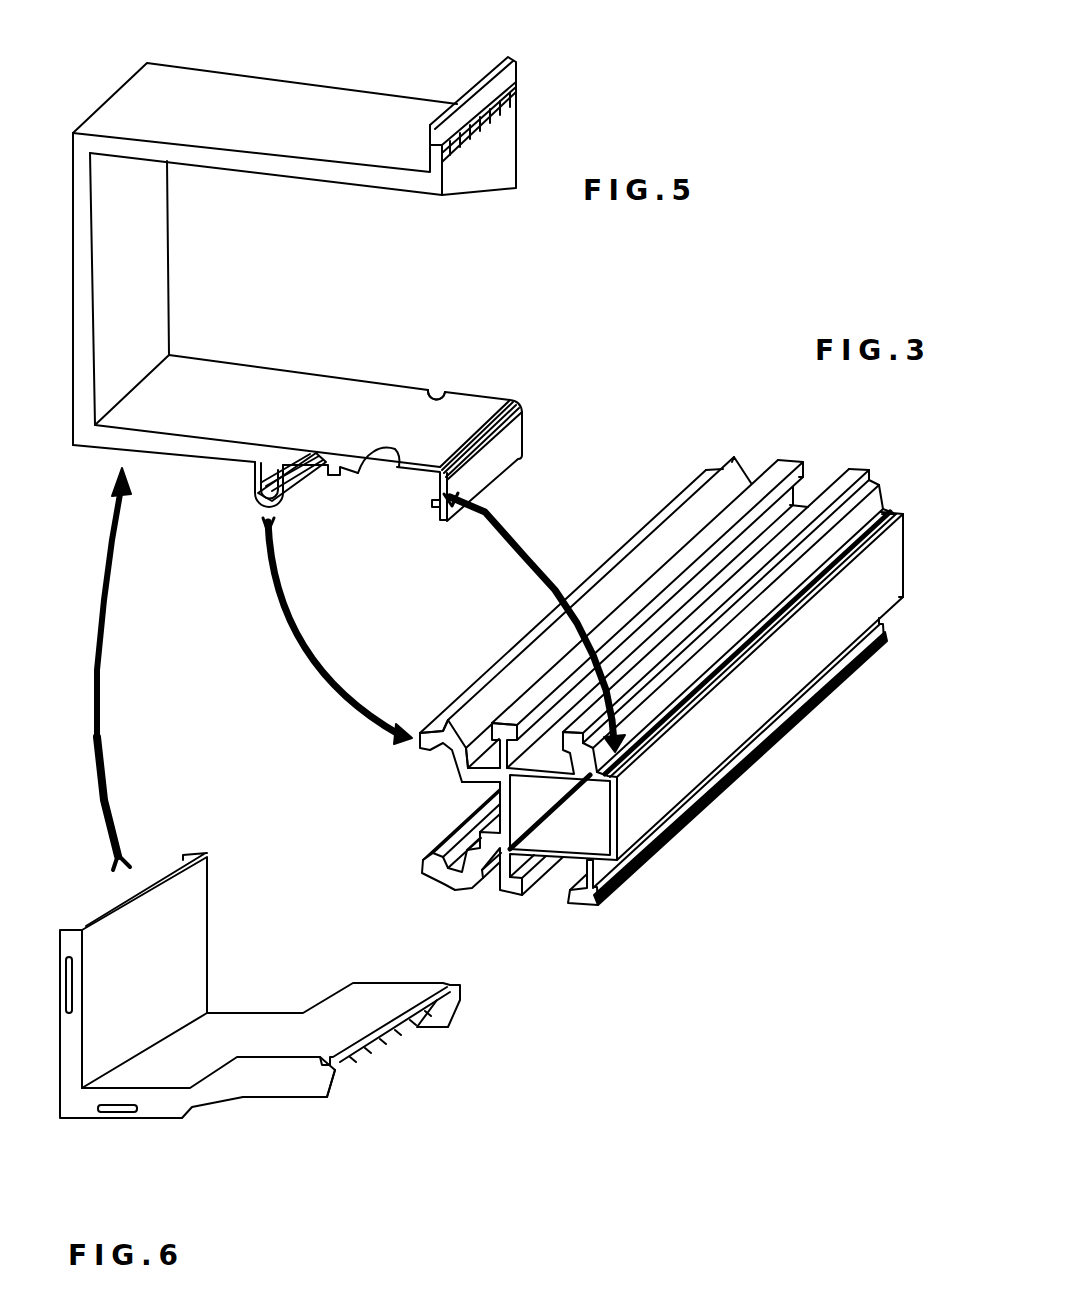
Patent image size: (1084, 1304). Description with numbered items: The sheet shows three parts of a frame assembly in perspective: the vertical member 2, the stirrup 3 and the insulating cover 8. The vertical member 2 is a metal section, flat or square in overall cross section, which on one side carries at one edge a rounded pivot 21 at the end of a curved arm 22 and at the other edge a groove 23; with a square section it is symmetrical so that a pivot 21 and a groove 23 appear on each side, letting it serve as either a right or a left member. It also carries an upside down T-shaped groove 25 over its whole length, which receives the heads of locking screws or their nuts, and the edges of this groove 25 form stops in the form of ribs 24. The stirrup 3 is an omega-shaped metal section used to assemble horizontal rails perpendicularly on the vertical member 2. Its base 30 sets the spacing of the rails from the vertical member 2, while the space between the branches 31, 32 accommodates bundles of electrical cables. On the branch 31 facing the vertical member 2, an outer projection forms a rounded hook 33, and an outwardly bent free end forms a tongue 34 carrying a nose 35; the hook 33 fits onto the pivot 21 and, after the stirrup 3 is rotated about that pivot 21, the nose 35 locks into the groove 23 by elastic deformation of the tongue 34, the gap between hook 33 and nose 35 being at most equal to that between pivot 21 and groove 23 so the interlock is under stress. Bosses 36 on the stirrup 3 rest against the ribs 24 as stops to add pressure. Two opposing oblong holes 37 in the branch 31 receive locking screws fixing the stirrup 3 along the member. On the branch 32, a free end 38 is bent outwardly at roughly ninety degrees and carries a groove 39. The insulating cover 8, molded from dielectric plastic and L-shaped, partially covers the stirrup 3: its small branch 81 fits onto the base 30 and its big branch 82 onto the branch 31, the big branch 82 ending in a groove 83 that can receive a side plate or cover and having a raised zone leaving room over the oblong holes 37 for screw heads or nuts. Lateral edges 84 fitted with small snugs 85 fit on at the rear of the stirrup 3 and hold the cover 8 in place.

In FIG. 3, the vertical member 2 is at (735, 434).
In FIG. 5, the stirrup 3 is at (277, 60).
In FIG. 6, the insulating cover 8 is at (228, 940).
In FIG. 3, the rounded pivot 21 is at (420, 736).
In FIG. 3, the curved arm 22 is at (488, 766).
In FIG. 3, the groove 23 is at (625, 728).
In FIG. 3, the ribs 24 is at (572, 732).
In FIG. 3, the upside down T-shaped groove 25 is at (500, 787).
In FIG. 5, the base 30 is at (167, 273).
In FIG. 5, the branch 31 is at (292, 382).
In FIG. 5, the branch 32 is at (353, 173).
In FIG. 5, the rounded hook 33 is at (255, 497).
In FIG. 5, the tongue 34 is at (520, 400).
In FIG. 5, the nose 35 is at (432, 503).
In FIG. 5, the bosses 36 is at (357, 477).
In FIG. 5, the oblong holes 37 is at (437, 388).
In FIG. 5, the free end 38 is at (504, 118).
In FIG. 5, the groove 39 is at (512, 82).
In FIG. 6, the small branch 81 is at (160, 992).
In FIG. 6, the big branch 82 is at (240, 1013).
In FIG. 6, the groove 83 is at (322, 1063).
In FIG. 6, the edges 84 is at (70, 1060).
In FIG. 6, the small snugs 85 is at (66, 960).